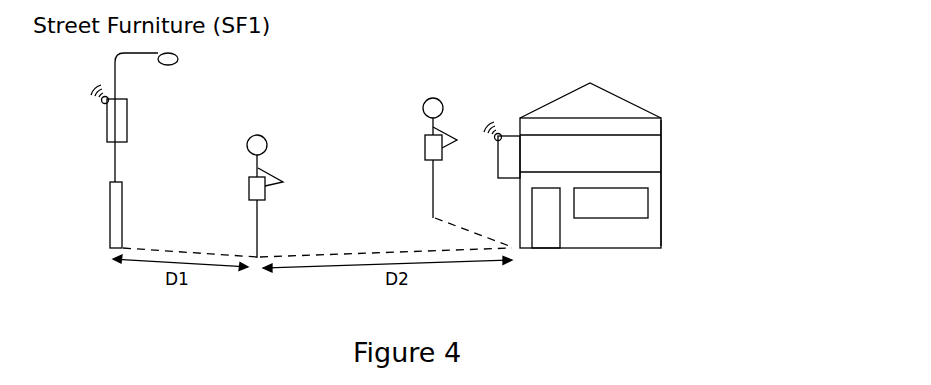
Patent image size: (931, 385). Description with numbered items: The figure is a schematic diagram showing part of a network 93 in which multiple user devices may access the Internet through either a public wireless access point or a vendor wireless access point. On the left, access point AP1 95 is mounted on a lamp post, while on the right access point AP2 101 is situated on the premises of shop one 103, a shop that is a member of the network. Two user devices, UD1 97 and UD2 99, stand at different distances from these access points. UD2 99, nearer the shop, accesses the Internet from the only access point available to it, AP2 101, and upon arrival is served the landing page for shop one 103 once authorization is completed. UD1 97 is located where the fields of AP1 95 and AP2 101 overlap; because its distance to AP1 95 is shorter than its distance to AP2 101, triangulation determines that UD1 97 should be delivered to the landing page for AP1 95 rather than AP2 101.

The network 93 is at (658, 72).
The access point AP1 95 is at (131, 109).
The user device UD1 97 is at (283, 181).
The user device UD2 99 is at (447, 128).
The access point AP2 101 is at (500, 133).
The shop 1 103 is at (663, 185).